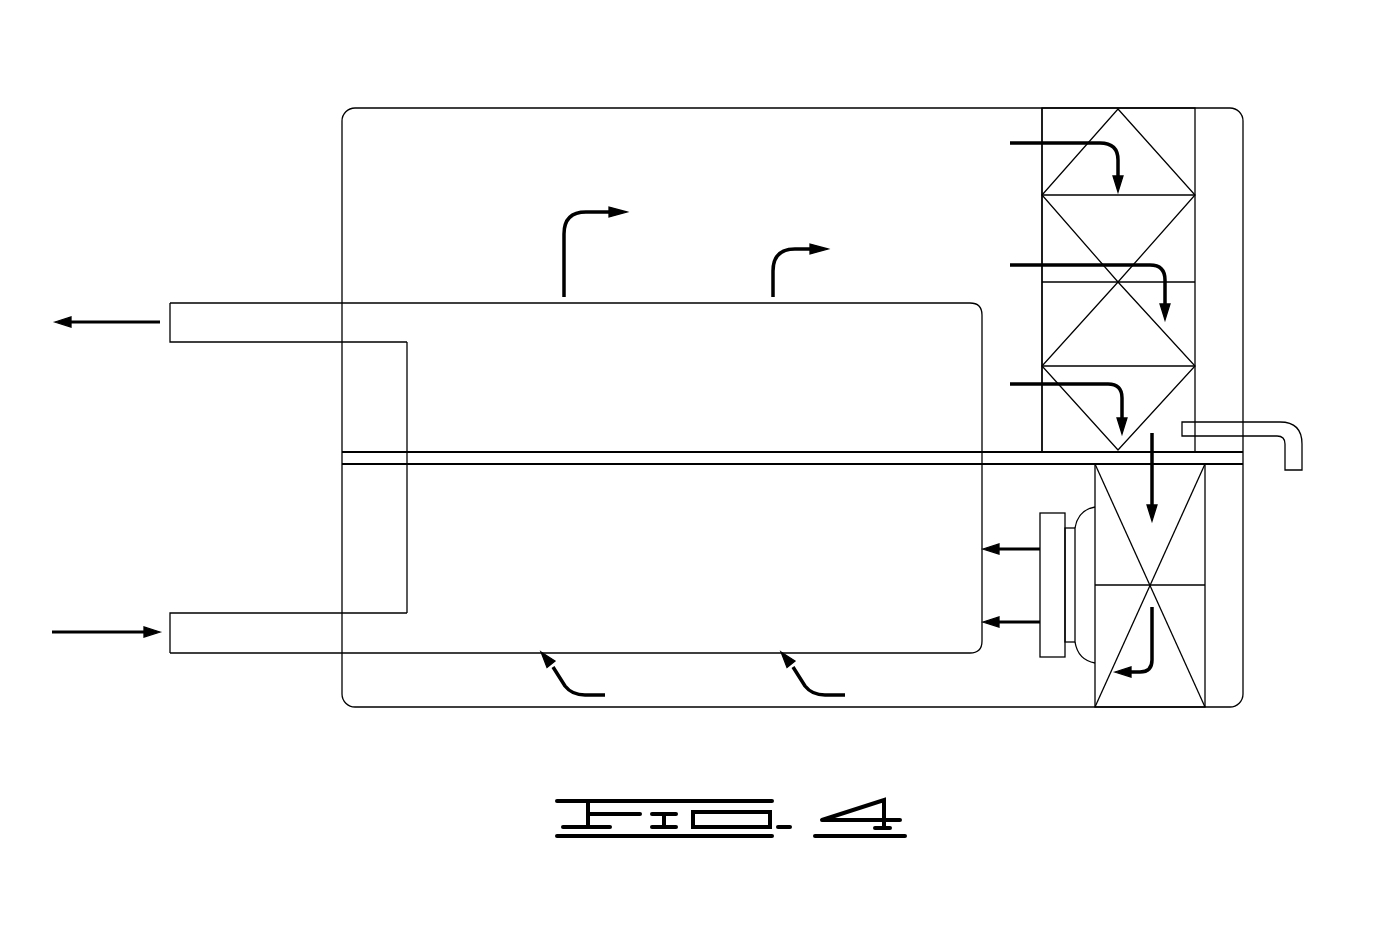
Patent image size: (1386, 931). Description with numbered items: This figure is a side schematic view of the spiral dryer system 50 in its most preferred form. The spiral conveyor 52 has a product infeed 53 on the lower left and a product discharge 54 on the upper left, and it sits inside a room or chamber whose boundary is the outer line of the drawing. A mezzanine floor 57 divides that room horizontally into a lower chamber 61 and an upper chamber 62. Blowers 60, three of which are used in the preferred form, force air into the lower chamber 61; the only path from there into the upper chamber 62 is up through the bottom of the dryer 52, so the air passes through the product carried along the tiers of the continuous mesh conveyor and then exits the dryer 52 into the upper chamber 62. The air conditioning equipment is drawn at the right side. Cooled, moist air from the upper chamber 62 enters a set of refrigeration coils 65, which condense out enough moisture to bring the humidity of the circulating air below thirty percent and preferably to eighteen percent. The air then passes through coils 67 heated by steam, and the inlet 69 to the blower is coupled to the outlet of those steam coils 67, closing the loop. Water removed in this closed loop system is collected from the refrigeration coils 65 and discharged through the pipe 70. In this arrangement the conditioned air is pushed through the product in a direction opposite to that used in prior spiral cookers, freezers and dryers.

The spiral dryer system 50 is at (740, 184).
The spiral conveyor 52 is at (677, 573).
The product infeed 53 is at (225, 613).
The product discharge 54 is at (240, 303).
The mezzanine floor 57 is at (688, 455).
The blowers 60 is at (1050, 650).
The lower chamber 61 is at (372, 496).
The upper chamber 62 is at (390, 145).
The refrigeration coils 65 is at (1180, 250).
The steam-heated coils 67 is at (1185, 562).
The blower inlet 69 is at (1085, 632).
The pipe 70 is at (1265, 420).